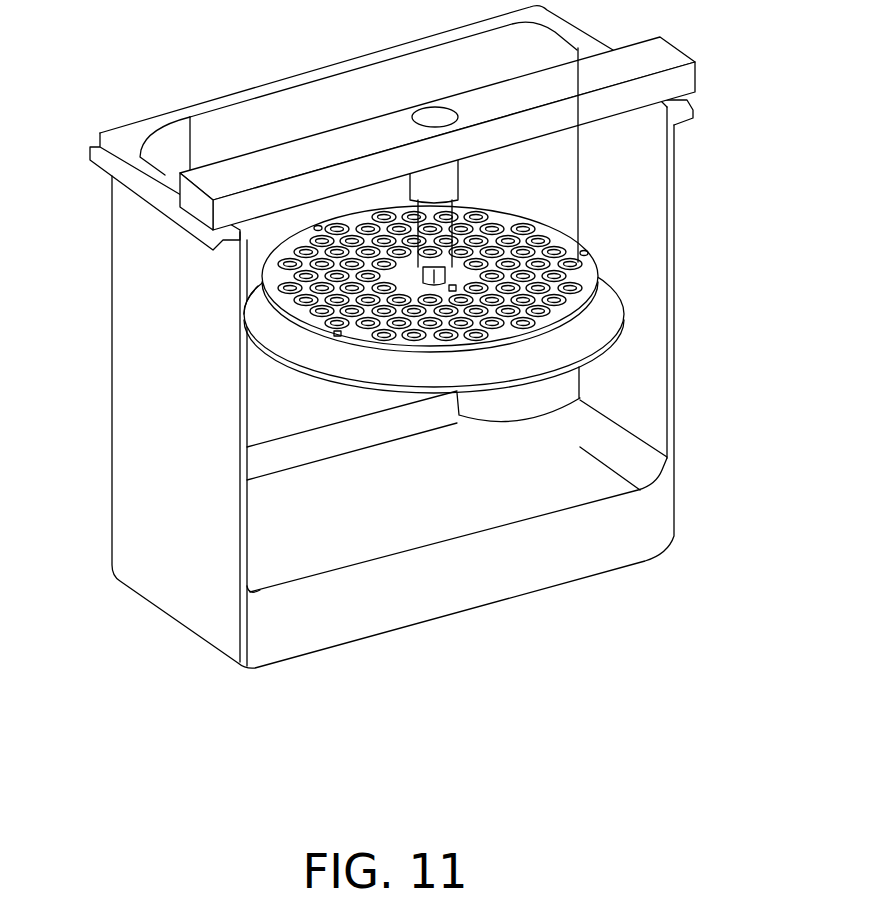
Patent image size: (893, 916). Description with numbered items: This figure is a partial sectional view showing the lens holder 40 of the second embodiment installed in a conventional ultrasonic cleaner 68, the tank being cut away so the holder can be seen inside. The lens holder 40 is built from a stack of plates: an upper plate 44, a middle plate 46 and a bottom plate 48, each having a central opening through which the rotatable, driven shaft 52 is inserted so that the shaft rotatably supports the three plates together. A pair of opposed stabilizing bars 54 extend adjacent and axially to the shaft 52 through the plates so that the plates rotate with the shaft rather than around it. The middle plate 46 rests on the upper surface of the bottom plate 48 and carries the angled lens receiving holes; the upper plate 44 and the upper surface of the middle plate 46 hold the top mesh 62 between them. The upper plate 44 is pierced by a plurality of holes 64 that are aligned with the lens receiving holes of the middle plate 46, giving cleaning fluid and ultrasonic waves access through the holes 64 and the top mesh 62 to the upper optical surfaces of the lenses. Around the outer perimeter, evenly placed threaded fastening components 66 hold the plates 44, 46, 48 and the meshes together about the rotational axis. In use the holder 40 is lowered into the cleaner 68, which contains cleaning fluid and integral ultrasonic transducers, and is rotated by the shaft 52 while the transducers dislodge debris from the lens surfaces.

The lens holder 40 is at (382, 272).
The upper plate 44 is at (277, 302).
The middle plate 46 is at (283, 332).
The bottom plate 48 is at (591, 351).
The driven shaft 52 is at (440, 262).
The stabilizing bars 54 is at (455, 288).
The top mesh 62 is at (593, 300).
The holes 64 is at (458, 250).
The threaded fastening components 66 is at (318, 226).
The ultrasonic cleaner 68 is at (660, 500).